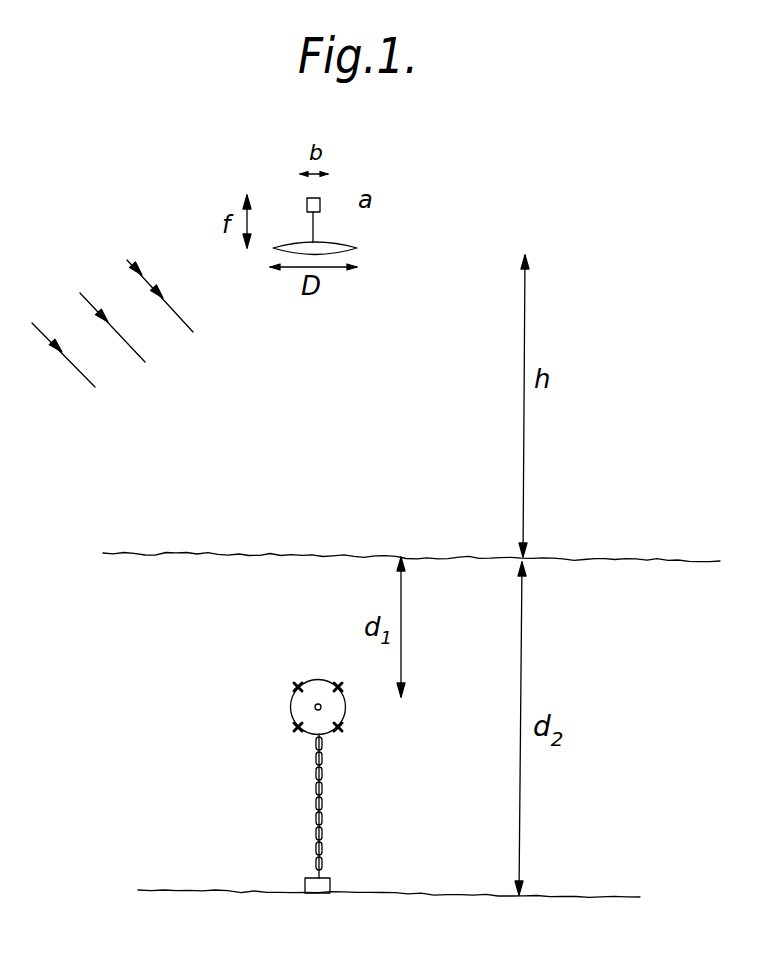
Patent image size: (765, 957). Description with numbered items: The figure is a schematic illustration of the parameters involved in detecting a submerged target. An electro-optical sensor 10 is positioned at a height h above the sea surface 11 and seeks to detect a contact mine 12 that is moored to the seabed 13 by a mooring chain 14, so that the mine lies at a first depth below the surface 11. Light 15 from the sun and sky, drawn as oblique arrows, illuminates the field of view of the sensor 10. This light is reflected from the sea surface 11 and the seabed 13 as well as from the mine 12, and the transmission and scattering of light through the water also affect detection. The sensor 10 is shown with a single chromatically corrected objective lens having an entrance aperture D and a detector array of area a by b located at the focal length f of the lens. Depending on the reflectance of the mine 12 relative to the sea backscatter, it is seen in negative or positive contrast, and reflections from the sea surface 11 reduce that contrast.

The electro-optical sensor 10 is at (367, 243).
The sea surface 11 is at (593, 558).
The contact mine 12 is at (347, 712).
The seabed 13 is at (577, 898).
The mooring chain 14 is at (323, 818).
The light 15 is at (180, 313).